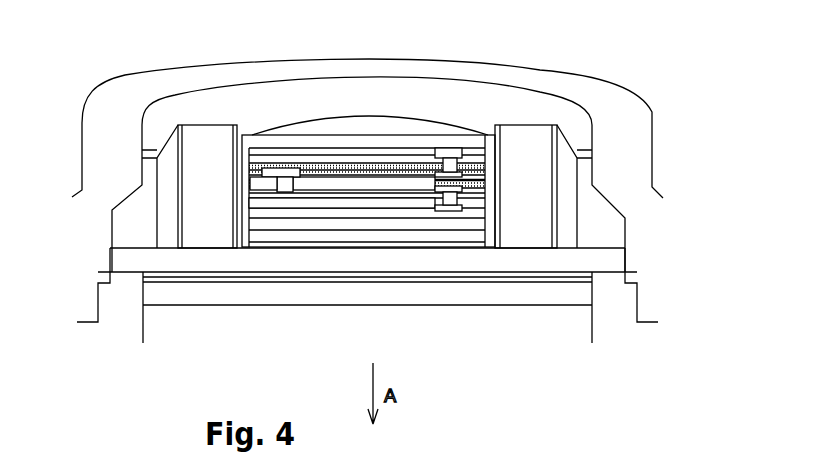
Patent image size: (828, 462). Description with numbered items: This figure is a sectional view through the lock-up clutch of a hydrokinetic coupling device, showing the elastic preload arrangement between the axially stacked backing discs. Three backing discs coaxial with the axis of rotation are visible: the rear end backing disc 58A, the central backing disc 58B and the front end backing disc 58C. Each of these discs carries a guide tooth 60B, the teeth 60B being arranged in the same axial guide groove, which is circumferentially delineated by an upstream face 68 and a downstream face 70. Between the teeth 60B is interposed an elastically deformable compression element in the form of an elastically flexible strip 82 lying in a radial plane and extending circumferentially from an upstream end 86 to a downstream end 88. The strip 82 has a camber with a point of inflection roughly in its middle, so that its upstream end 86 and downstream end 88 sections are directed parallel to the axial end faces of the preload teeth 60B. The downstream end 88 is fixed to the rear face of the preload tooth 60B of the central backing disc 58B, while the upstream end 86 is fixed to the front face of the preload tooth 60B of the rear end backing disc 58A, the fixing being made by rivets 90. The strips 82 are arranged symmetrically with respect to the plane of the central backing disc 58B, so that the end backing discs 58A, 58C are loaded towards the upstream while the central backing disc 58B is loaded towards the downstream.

The rear end backing disc 58A is at (312, 165).
The central backing disc 58B is at (483, 181).
The front end backing disc 58C is at (320, 200).
The guide tooth 60B is at (478, 148).
The upstream face 68 is at (485, 222).
The downstream face 70 is at (250, 212).
The elastically flexible strip 82 is at (400, 163).
The upstream end 86 is at (460, 150).
The downstream end 88 is at (262, 168).
The rivet 90 is at (288, 176).